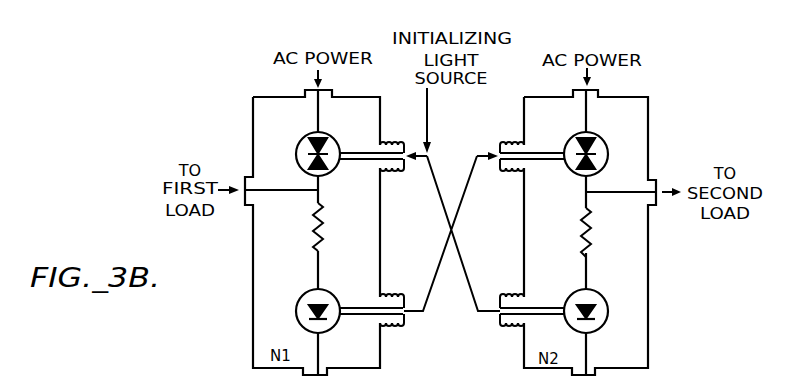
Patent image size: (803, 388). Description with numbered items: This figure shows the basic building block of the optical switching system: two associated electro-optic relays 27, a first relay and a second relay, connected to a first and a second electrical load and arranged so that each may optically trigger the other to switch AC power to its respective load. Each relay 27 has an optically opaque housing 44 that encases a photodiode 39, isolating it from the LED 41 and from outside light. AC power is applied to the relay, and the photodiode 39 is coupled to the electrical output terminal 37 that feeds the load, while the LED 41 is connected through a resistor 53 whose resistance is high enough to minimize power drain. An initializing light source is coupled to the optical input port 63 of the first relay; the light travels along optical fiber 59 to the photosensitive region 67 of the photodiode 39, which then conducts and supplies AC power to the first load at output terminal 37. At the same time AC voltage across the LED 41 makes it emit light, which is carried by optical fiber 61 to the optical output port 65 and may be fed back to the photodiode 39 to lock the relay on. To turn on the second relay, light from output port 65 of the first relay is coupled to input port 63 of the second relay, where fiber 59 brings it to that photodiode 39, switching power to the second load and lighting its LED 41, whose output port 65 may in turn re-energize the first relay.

The electro-optic relay 27 is at (234, 320).
The optically opaque housing 44 is at (264, 97).
The electrical output terminal 37 is at (249, 177).
The photodiode 39 is at (293, 125).
The LED 41 is at (292, 290).
The resistor 53 is at (323, 238).
The photosensitive region 67 is at (342, 152).
The optical fiber 59 is at (344, 160).
The optical input port 63 is at (386, 144).
The optical output port 65 is at (390, 295).
The optical fiber 61 is at (343, 306).